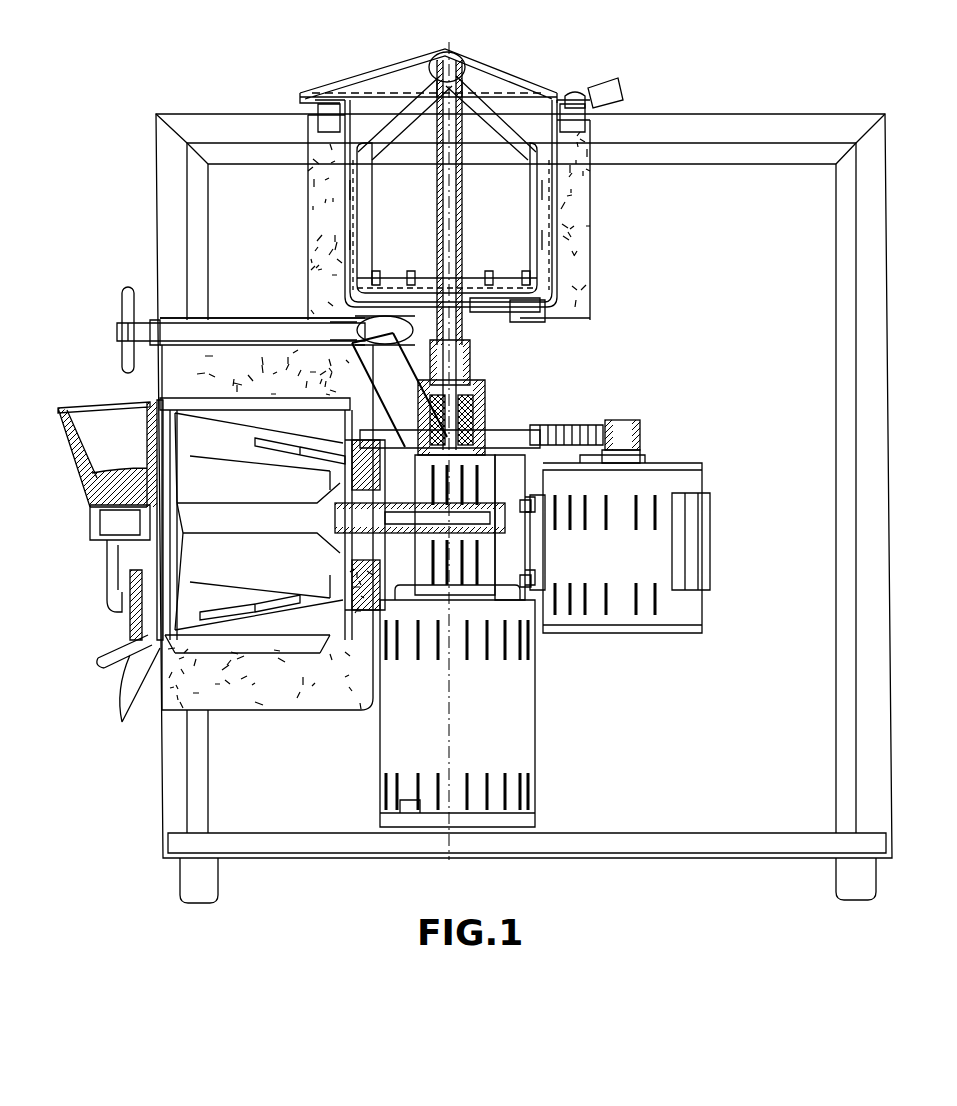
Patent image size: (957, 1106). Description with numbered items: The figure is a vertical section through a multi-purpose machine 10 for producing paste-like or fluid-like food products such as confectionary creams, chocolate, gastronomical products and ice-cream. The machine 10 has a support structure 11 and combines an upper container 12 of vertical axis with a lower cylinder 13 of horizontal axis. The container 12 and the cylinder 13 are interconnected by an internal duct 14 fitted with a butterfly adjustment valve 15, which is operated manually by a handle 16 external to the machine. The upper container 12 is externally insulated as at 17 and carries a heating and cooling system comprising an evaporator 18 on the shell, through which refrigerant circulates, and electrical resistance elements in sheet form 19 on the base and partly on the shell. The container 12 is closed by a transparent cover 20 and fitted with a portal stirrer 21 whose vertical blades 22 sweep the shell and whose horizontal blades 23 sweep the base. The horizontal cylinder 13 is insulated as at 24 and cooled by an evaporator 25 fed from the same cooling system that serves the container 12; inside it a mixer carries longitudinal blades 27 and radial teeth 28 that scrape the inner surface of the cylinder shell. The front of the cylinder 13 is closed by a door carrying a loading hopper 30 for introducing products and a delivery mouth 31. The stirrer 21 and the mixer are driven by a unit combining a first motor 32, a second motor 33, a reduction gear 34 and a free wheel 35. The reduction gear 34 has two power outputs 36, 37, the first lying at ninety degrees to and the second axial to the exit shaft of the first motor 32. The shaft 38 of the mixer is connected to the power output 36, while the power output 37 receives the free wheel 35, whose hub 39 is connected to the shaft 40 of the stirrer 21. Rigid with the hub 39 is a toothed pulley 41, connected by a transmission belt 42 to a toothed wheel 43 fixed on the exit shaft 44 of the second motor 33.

The multi-purpose machine 10 is at (718, 103).
The support structure 11 is at (598, 855).
The upper container 12 is at (530, 225).
The lower cylinder 13 is at (290, 632).
The internal duct 14 is at (372, 378).
The butterfly adjustment valve 15 is at (392, 316).
The handle 16 is at (122, 300).
The insulation 17 is at (590, 203).
The evaporator 18 is at (565, 262).
The electrical resistance elements in sheet form 19 is at (526, 306).
The transparent cover 20 is at (488, 78).
The portal stirrer 21 is at (516, 130).
The vertical blades 22 is at (535, 152).
The horizontal blades 23 is at (500, 312).
The insulation 24 is at (248, 712).
The evaporator 25 is at (310, 650).
The longitudinal blades 27 is at (258, 596).
The radial teeth 28 is at (256, 436).
The loading hopper 30 is at (96, 418).
The delivery mouth 31 is at (122, 622).
The first motor 32 is at (518, 742).
The second motor 33 is at (690, 478).
The reduction gear 34 is at (330, 410).
The free wheel 35 is at (473, 425).
The power output 36 is at (345, 540).
The power output 37 is at (480, 400).
The shaft 38 is at (352, 516).
The hub 39 is at (505, 448).
The shaft 40 is at (455, 214).
The toothed pulley 41 is at (522, 470).
The transmission belt 42 is at (591, 425).
The toothed wheel 43 is at (632, 420).
The exit shaft 44 is at (640, 456).